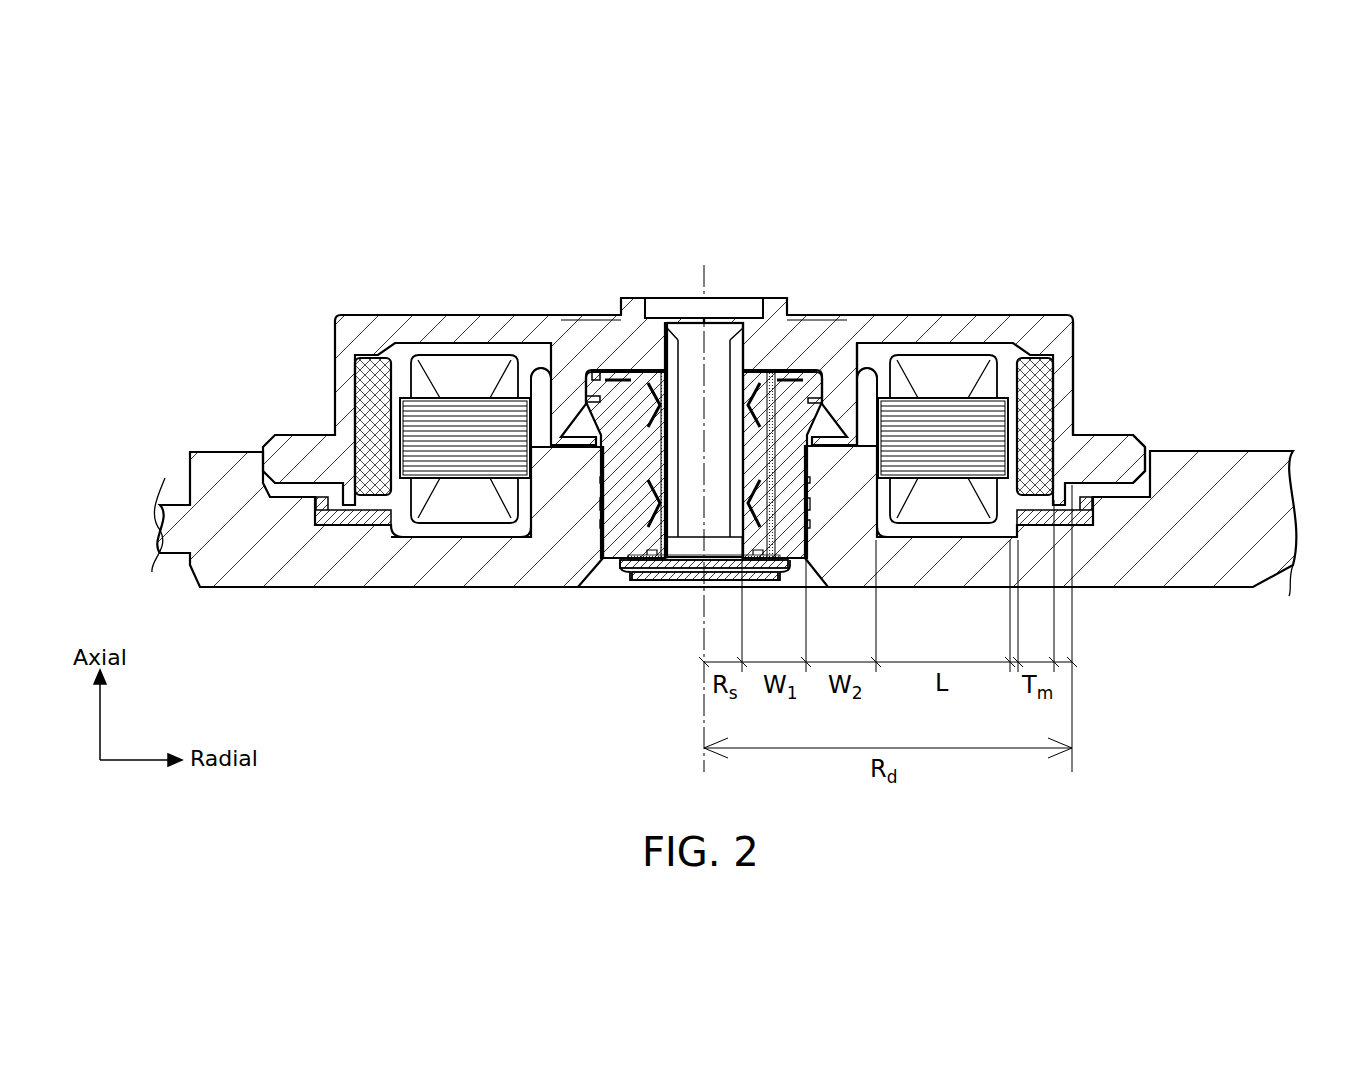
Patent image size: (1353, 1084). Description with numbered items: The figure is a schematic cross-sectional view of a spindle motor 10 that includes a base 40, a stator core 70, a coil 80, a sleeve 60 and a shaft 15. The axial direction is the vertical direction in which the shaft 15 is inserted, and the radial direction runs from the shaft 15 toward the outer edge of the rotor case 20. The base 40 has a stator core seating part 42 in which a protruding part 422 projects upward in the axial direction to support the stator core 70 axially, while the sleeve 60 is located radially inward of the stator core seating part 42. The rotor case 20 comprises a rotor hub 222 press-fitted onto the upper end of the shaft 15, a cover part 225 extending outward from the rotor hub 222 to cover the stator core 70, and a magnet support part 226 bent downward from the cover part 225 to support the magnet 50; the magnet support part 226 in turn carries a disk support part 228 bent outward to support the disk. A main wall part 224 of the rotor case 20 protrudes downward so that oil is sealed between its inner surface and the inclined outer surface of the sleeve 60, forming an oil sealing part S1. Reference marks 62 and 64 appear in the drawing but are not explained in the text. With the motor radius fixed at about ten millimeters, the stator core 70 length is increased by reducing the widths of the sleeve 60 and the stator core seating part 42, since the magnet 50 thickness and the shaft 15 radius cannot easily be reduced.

The spindle motor 10 is at (424, 154).
The shaft 15 is at (690, 500).
The rotor case 20 is at (1110, 293).
The rotor hub 222 is at (747, 360).
The main wall part 224 is at (840, 410).
The cover part 225 is at (973, 317).
The magnet support part 226 is at (1073, 372).
The disk support part 228 is at (1125, 443).
The base 40 is at (1225, 548).
The stator core seating part 42 is at (568, 503).
The protruding part 422 is at (867, 377).
The magnet 50 is at (1045, 413).
The sleeve 60 is at (628, 532).
The protrusion of rotor hub 62 is at (588, 396).
The flange of rotor hub 64 is at (597, 374).
The stator core 70 is at (462, 467).
The coil 80 is at (430, 515).
The oil sealing part S1 is at (533, 437).